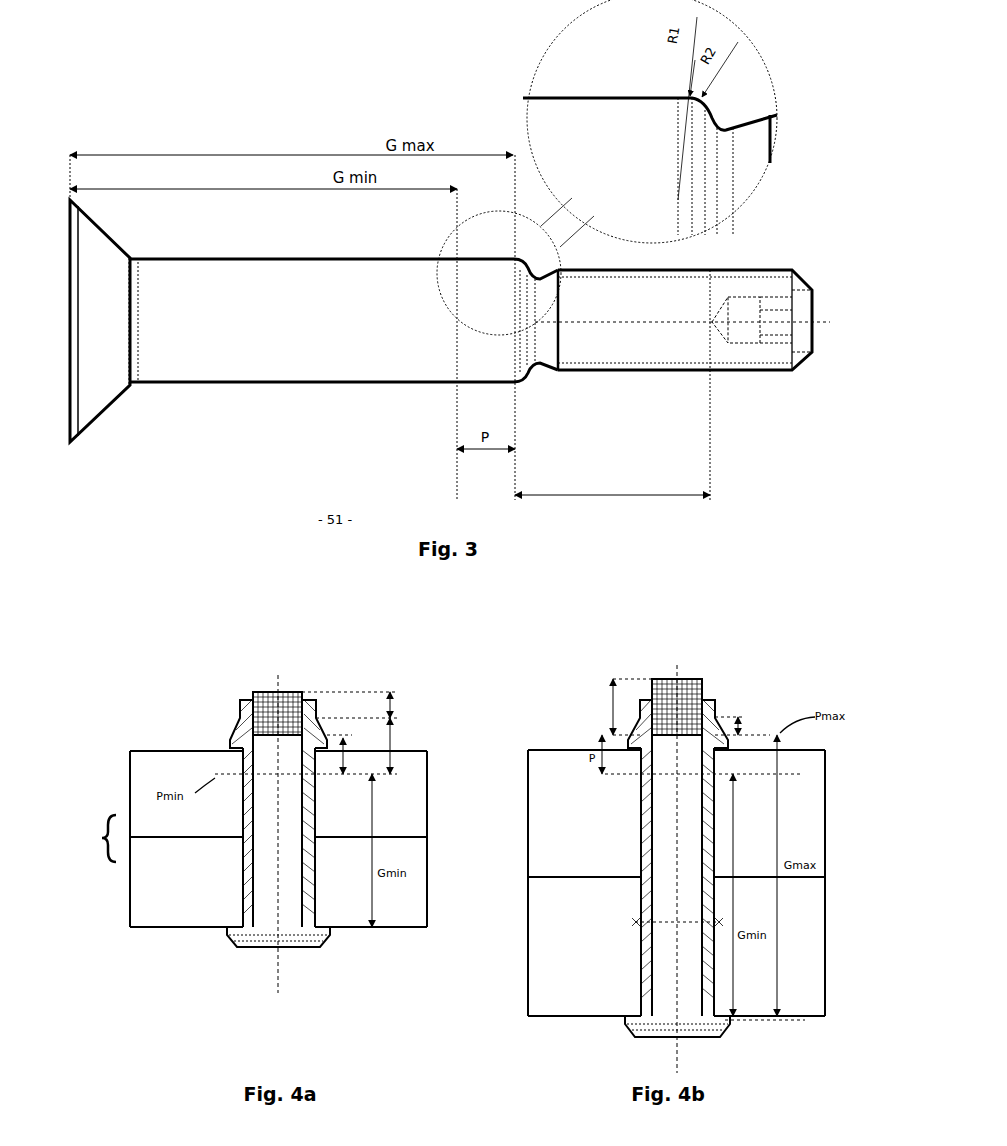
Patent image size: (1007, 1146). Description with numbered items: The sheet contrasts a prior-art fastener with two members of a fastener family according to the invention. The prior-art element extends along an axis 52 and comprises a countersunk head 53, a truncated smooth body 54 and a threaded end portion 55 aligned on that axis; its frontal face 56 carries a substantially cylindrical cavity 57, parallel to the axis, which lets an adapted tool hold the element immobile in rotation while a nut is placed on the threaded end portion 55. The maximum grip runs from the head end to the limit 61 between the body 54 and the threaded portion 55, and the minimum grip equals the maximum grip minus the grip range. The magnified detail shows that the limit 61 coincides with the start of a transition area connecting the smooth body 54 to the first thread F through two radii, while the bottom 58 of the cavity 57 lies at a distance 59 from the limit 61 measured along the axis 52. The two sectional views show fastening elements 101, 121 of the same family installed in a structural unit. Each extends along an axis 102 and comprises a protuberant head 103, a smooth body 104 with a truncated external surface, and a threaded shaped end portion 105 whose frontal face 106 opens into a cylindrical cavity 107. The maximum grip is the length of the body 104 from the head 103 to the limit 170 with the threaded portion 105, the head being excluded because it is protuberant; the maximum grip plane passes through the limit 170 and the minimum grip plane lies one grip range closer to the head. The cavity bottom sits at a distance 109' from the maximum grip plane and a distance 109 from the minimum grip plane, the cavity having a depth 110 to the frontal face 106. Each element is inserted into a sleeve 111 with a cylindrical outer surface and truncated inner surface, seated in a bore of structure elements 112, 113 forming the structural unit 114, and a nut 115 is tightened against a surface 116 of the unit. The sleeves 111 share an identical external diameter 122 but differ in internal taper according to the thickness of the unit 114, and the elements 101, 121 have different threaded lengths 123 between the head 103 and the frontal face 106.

In FIG. 3, the axis 52 is at (612, 322).
In FIG. 3, the countersunk head 53 is at (93, 388).
In FIG. 3, the truncated smooth body 54 is at (303, 363).
In FIG. 3, the threaded end portion 55 is at (730, 373).
In FIG. 3, the frontal face 56 is at (813, 302).
In FIG. 3, the cavity 57 is at (742, 305).
In FIG. 3, the bottom of the cavity 58 is at (710, 318).
In FIG. 3, the distance 59 is at (620, 497).
In FIG. 3, the limit 61 is at (516, 386).
In FIG. 3, the first thread F is at (755, 110).
In FIG. 4a, the fastening element 101 is at (306, 686).
In FIG. 4a, the axis 102 is at (278, 965).
In FIG. 4b, the axis 102 is at (680, 1062).
In FIG. 4a, the protuberant head 103 is at (300, 948).
In FIG. 4a, the smooth body 104 is at (255, 905).
In FIG. 4a, the shaped end portion 105 is at (252, 696).
In FIG. 4a, the frontal face 106 is at (268, 690).
In FIG. 4b, the cavity 107 is at (675, 690).
In FIG. 4a, the distance 109 is at (381, 754).
In FIG. 4b, the distance 109' is at (748, 711).
In FIG. 4a, the depth 110 is at (317, 733).
In FIG. 4a, the sleeve 111 is at (315, 905).
In FIG. 4a, the structure element 112 is at (135, 915).
In FIG. 4a, the structure element 113 is at (130, 772).
In FIG. 4a, the structural unit 114 is at (104, 842).
In FIG. 4a, the nut 115 is at (240, 720).
In FIG. 4a, the surface 116 is at (140, 751).
In FIG. 4b, the fastening element 121 is at (706, 674).
In FIG. 4b, the external diameter 122 is at (640, 922).
In FIG. 4b, the threaded length 123 is at (613, 712).
In FIG. 4a, the limit 170 is at (232, 745).